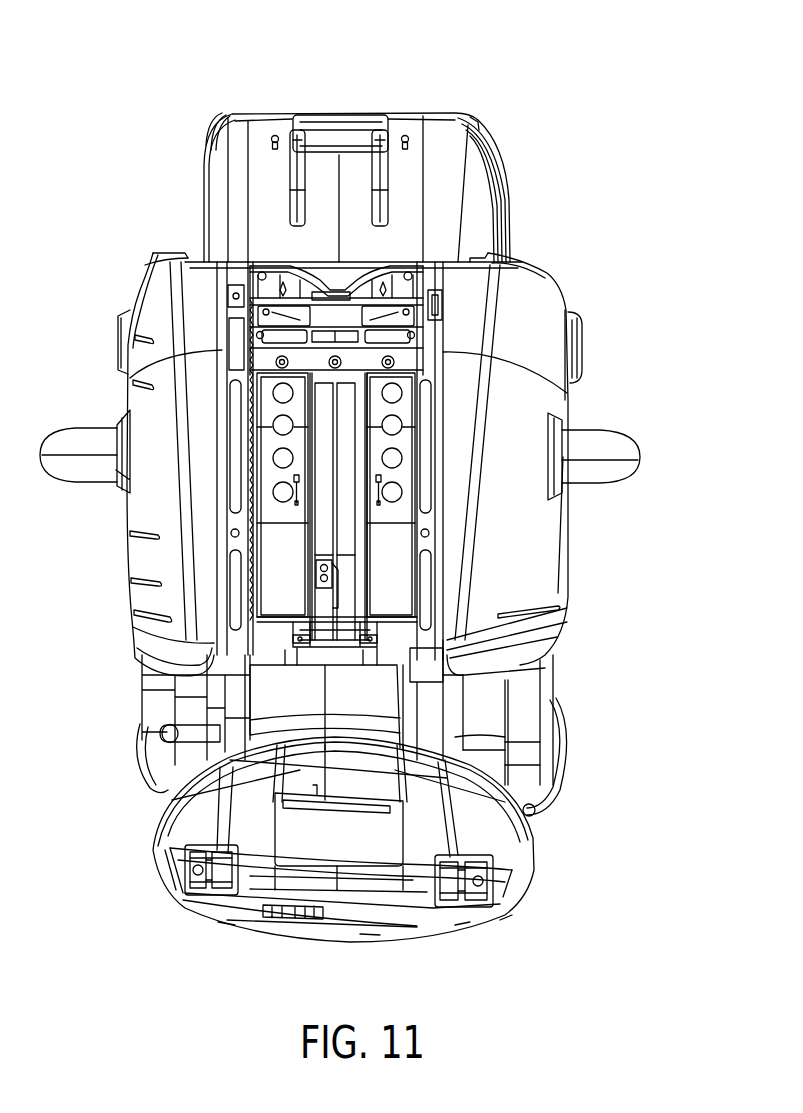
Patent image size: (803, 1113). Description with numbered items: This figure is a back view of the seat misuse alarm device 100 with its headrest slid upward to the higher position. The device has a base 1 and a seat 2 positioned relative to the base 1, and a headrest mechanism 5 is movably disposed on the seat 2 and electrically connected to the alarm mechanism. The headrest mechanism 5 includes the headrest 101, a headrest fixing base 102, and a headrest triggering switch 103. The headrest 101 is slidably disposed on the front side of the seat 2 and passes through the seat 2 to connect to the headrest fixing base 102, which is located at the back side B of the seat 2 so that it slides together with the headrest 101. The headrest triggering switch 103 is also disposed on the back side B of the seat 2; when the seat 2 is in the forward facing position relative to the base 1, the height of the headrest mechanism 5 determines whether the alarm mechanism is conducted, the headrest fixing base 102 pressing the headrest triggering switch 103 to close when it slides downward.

The seat misuse alarm device 100 is at (97, 86).
The headrest mechanism 5 is at (221, 114).
The headrest 101 is at (486, 186).
The headrest fixing base 102 is at (392, 352).
The headrest triggering switch 103 is at (320, 573).
The back side B is at (280, 545).
The seat 2 is at (540, 552).
The base 1 is at (505, 848).